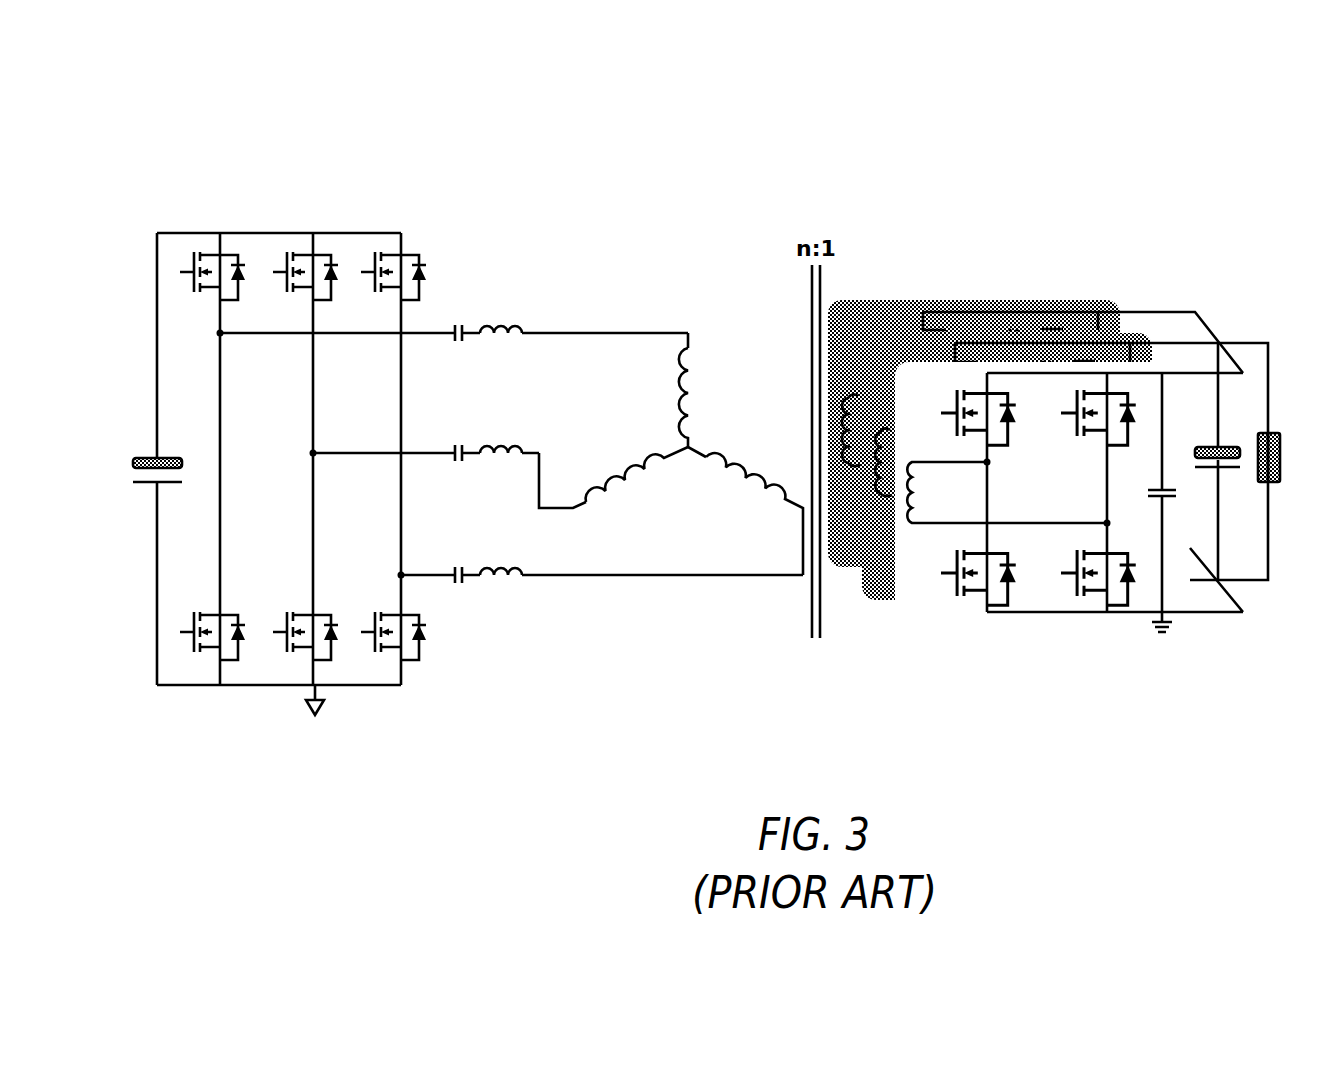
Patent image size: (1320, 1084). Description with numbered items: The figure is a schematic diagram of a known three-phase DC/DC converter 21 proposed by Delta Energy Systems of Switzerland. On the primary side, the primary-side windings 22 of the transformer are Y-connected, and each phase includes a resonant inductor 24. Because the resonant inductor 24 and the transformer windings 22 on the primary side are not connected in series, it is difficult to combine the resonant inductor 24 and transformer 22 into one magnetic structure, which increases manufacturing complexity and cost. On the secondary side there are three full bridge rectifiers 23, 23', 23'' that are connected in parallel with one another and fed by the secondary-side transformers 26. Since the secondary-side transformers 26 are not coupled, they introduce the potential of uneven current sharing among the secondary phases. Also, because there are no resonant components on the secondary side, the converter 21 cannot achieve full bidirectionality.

The three-phase DC/DC converter 21 is at (210, 194).
The primary-side windings 22 is at (690, 388).
The full bridge rectifier 23 is at (1035, 428).
The full bridge rectifier 23' is at (1069, 494).
The full bridge rectifier 23'' is at (1071, 463).
The resonant inductor 24 is at (508, 341).
The secondary-side transformers 26 is at (916, 462).